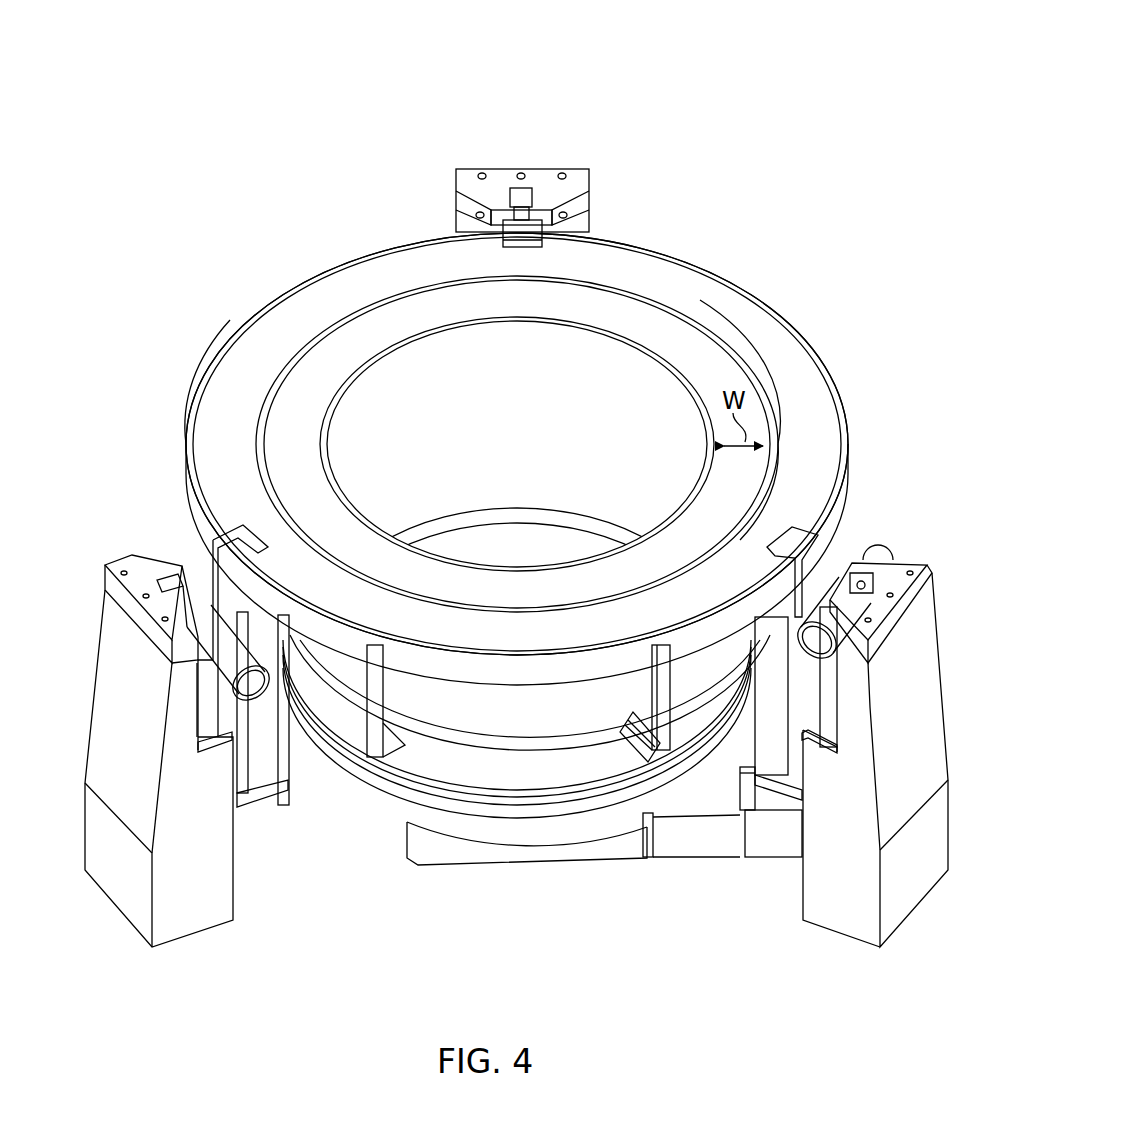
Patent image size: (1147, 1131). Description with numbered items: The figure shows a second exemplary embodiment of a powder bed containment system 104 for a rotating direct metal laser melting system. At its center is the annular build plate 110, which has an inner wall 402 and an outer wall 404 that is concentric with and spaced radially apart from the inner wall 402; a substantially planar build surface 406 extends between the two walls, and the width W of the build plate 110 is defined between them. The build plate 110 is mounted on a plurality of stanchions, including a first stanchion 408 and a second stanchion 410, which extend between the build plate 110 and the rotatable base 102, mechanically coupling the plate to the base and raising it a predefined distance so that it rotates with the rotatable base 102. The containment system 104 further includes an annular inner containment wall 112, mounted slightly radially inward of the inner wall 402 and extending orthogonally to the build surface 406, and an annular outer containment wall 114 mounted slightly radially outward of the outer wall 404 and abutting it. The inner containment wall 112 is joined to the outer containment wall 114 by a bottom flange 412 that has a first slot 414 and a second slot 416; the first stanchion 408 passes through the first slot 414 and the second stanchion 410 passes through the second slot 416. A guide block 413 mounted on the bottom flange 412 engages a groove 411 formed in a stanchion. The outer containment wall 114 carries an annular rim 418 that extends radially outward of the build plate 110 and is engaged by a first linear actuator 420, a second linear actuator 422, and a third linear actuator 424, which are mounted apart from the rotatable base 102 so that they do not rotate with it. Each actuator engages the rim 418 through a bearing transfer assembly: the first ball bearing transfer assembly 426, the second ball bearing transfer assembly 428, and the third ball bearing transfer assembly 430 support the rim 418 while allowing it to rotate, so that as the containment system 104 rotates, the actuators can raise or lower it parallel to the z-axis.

The powder bed containment system 104 is at (834, 41).
The annular build plate 110 is at (843, 400).
The annular inner containment wall 112 is at (565, 365).
The annular outer containment wall 114 is at (283, 372).
The inner wall 402 is at (712, 442).
The outer wall 404 is at (745, 366).
The build surface 406 is at (742, 480).
The annular rim 418 is at (195, 386).
The first linear actuator 420 is at (520, 168).
The first ball bearing transfer assembly 426 is at (523, 232).
The second ball bearing transfer assembly 428 is at (795, 545).
The third ball bearing transfer assembly 430 is at (196, 550).
The second linear actuator 422 is at (920, 780).
The third linear actuator 424 is at (178, 915).
The rotatable base 102 is at (321, 776).
The first stanchion 408 is at (356, 722).
The second stanchion 410 is at (716, 806).
The groove 411 is at (615, 750).
The bottom flange 412 is at (497, 780).
The guide block 413 is at (660, 718).
The first slot 414 is at (400, 752).
The second slot 416 is at (662, 760).